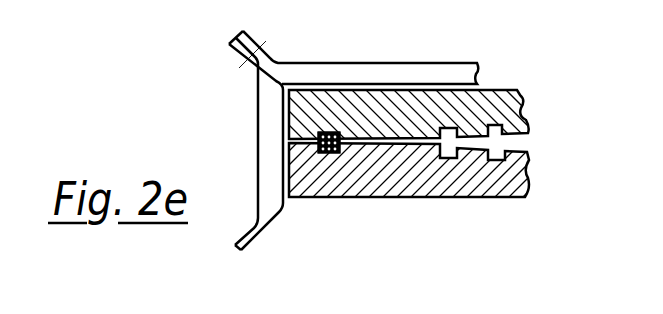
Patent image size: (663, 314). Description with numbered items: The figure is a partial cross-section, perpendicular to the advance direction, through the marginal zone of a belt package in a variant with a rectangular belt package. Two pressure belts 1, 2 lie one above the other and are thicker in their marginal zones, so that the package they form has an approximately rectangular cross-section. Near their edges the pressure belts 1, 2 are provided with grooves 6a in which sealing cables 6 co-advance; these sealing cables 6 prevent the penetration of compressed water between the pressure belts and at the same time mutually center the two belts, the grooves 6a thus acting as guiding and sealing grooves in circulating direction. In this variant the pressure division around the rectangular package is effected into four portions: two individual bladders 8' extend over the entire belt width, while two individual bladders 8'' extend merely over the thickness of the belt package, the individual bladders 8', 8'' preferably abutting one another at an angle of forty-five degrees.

The pressure belt 1 is at (510, 110).
The pressure belt 2 is at (508, 178).
The sealing cable 6 is at (334, 153).
The groove 6a is at (347, 224).
The individual bladder 8' is at (353, 48).
The individual bladder 8'' is at (235, 144).